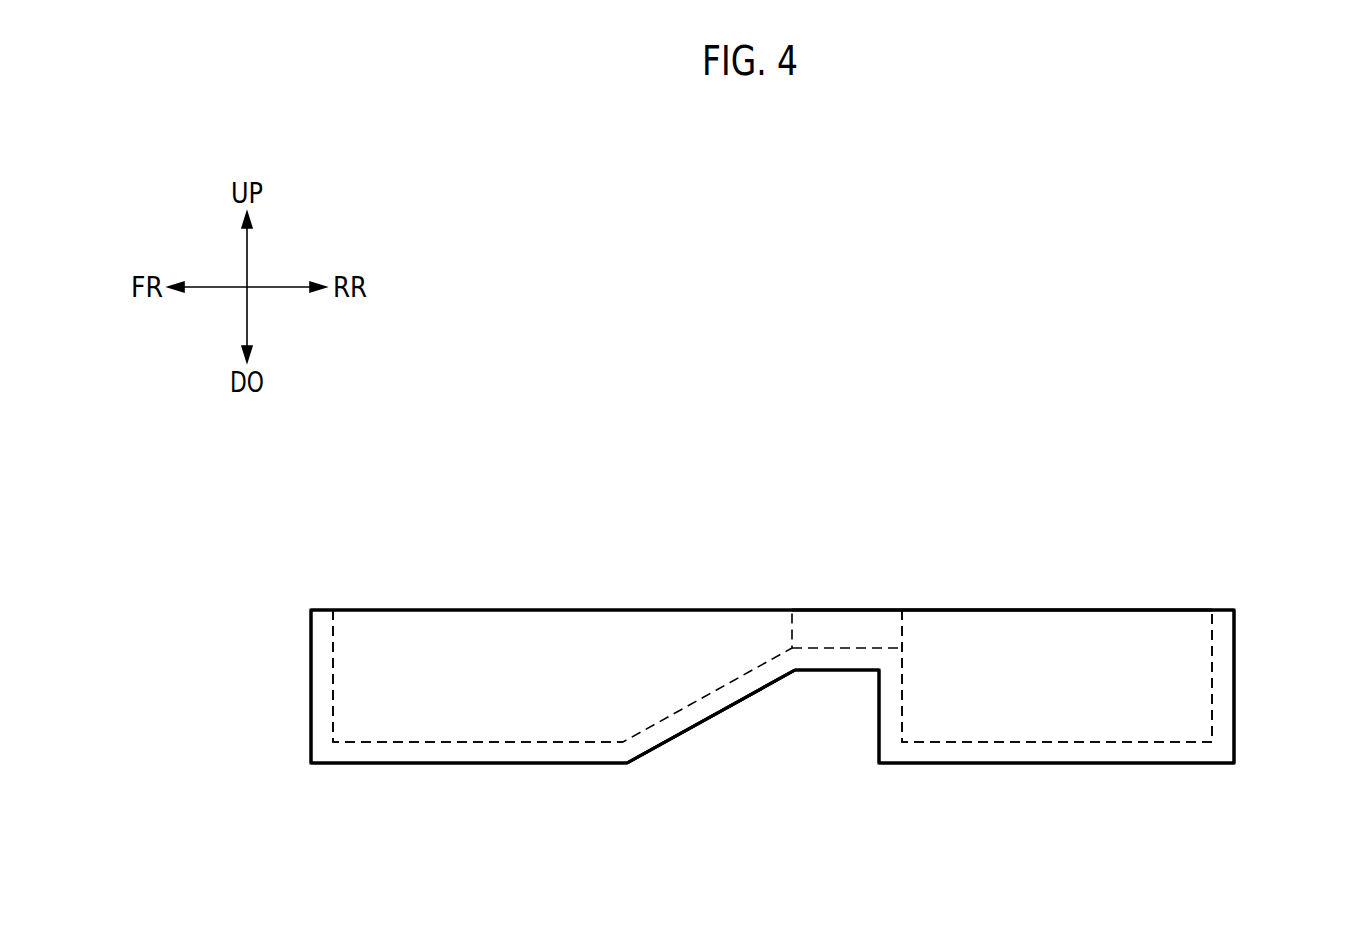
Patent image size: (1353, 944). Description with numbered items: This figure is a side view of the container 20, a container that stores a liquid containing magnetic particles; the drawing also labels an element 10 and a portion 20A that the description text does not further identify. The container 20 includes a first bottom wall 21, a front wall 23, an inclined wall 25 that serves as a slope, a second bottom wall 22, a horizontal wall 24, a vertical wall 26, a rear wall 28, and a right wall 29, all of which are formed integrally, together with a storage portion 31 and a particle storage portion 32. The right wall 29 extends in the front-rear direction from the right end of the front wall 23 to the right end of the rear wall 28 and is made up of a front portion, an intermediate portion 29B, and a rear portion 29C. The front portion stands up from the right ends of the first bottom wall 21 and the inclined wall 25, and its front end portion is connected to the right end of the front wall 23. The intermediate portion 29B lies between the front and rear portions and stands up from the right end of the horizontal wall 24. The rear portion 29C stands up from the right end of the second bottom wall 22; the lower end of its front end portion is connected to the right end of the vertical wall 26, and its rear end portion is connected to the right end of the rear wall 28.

The vehicle body structure 10 is at (1248, 418).
The container 20 is at (320, 592).
The inclined portion of side member 20A is at (630, 638).
The first bottom wall 21 is at (462, 753).
The second bottom wall 22 is at (1052, 752).
The front wall 23 is at (320, 675).
The horizontal wall 24 is at (833, 660).
The inclined wall 25 is at (702, 710).
The vertical wall 26 is at (887, 708).
The rear wall 28 is at (1222, 688).
The right wall 29 is at (556, 596).
The intermediate portion 29B is at (844, 625).
The rear portion 29C is at (1068, 635).
The storage portion 31 is at (435, 636).
The particle storage portion 32 is at (1170, 624).